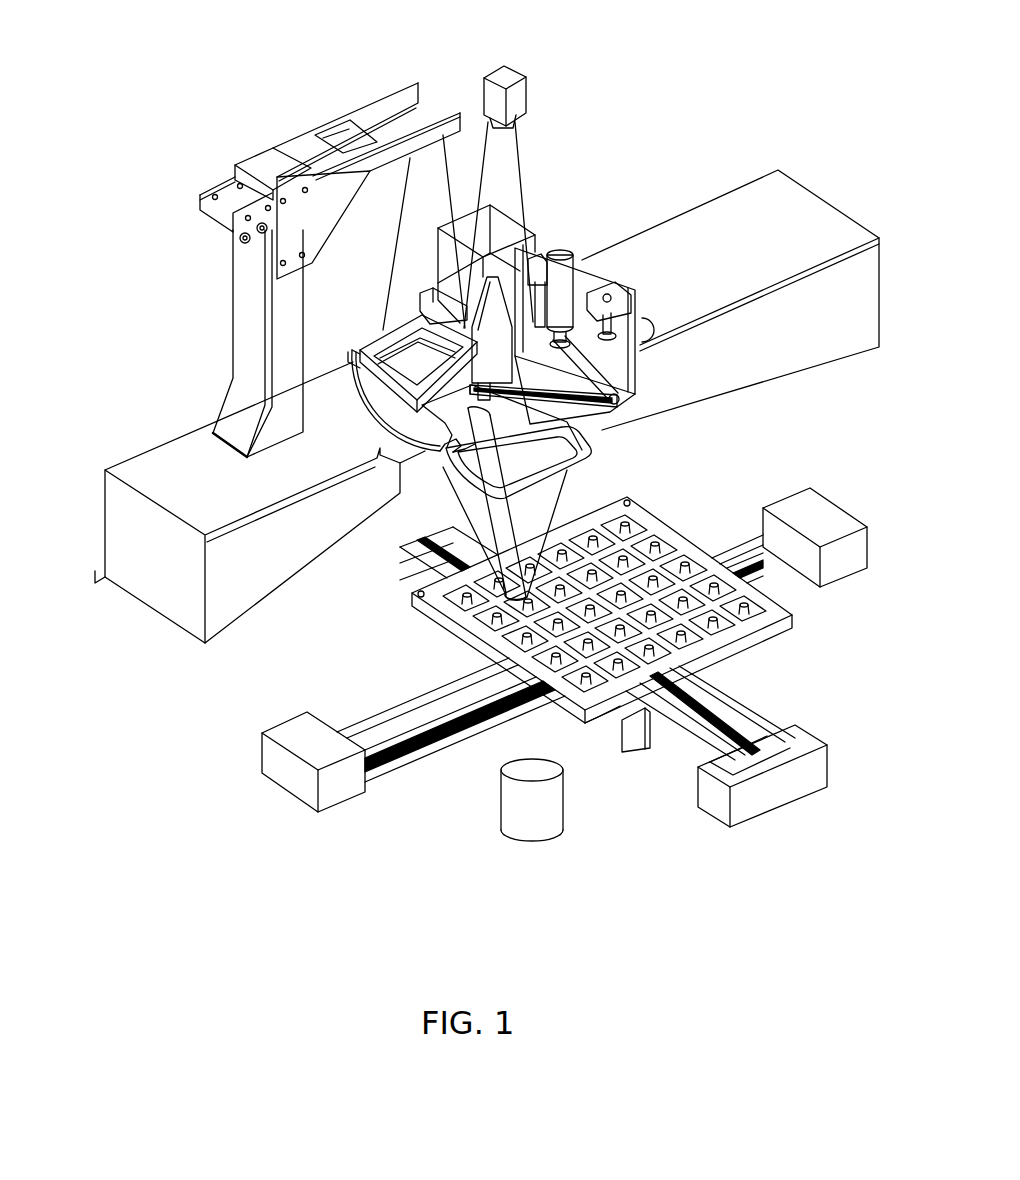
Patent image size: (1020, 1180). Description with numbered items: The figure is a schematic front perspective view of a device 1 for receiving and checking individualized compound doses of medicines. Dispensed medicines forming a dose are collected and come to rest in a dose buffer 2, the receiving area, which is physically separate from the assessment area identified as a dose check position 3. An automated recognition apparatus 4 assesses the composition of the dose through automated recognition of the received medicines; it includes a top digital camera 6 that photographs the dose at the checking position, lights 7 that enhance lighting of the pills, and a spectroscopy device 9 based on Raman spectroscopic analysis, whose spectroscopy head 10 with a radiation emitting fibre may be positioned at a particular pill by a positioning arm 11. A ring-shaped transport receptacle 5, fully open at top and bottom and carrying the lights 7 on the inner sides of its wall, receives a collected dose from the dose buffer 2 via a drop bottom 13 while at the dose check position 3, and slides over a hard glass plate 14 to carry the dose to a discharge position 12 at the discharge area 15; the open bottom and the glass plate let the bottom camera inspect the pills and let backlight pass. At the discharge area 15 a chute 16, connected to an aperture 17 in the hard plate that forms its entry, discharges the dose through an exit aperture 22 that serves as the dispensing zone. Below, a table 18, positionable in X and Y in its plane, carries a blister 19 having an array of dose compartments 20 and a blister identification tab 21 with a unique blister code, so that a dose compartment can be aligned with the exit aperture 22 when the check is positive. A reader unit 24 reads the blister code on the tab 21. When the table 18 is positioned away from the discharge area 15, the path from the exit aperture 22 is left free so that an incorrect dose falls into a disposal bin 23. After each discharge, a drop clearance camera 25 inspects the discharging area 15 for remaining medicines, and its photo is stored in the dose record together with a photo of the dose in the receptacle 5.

The device 1 is at (157, 775).
The dose buffer 2 is at (501, 244).
The dose check position 3 is at (261, 365).
The automated recognition apparatus 4 is at (339, 236).
The transport receptacle 5 is at (261, 376).
The top digital camera 6 is at (170, 233).
The lights 7 is at (410, 335).
The spectroscopy device 9 is at (492, 338).
The spectroscopy head 10 is at (259, 401).
The positioning arm 11 is at (633, 344).
The discharge position 12 is at (416, 554).
The drop bottom 13 is at (411, 272).
The glass plate 14 is at (449, 526).
The discharge area 15 is at (475, 692).
The chute 16 is at (434, 662).
The aperture 17 is at (578, 463).
The table 18 is at (648, 610).
The blister 19 is at (604, 587).
The dose compartments 20 is at (609, 635).
The blister identification tab 21 is at (599, 802).
The exit aperture 22 is at (484, 755).
The disposal bin 23 is at (532, 838).
The reader unit 24 is at (662, 812).
The drop clearance camera 25 is at (521, 197).